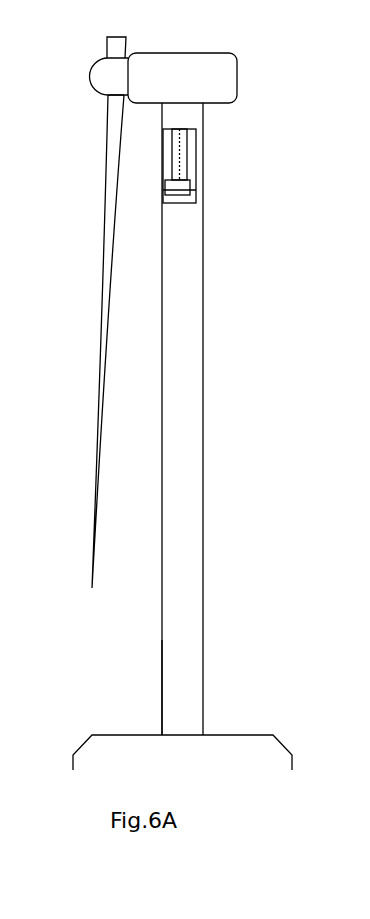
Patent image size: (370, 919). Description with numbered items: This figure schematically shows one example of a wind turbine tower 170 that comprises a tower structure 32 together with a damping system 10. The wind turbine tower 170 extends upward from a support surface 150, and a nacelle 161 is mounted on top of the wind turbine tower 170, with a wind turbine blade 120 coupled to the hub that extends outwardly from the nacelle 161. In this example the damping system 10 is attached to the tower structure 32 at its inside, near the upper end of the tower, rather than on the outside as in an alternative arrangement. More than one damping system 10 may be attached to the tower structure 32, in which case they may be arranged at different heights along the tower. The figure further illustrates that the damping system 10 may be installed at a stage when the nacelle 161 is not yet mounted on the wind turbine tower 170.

The nacelle 161 is at (243, 55).
The wind turbine blade 120 is at (92, 250).
The wind turbine tower 170 is at (142, 627).
The tower structure 32 is at (161, 707).
The damping system 10 is at (202, 152).
The support surface 150 is at (242, 733).